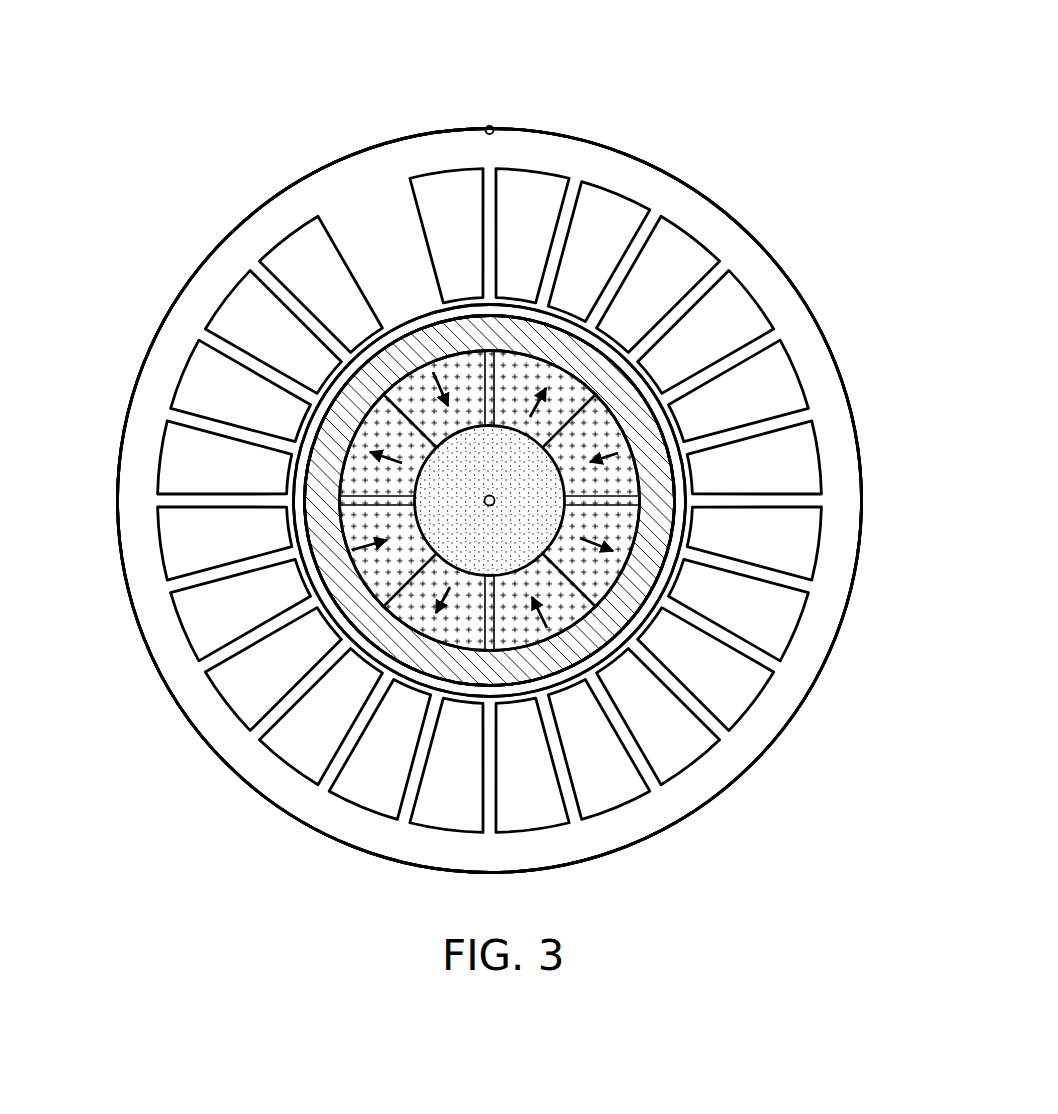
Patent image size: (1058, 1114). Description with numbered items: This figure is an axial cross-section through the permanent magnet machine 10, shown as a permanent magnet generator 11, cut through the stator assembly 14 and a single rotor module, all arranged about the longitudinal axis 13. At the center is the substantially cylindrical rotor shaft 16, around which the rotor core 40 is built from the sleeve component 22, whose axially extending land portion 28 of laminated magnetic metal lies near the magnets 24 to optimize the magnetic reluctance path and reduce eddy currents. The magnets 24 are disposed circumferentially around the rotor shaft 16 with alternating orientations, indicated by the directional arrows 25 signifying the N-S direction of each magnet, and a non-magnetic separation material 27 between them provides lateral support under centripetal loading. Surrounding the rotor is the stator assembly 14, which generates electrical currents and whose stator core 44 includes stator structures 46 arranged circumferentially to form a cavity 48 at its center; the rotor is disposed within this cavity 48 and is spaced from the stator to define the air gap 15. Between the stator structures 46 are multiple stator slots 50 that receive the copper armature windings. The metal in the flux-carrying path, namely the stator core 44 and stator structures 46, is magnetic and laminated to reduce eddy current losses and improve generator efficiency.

The permanent magnet machine 10 is at (311, 75).
The permanent magnet generator 11 is at (849, 297).
The longitudinal axis 13 is at (494, 496).
The stator assembly 14 is at (787, 670).
The air gap 15 is at (372, 350).
The rotor shaft 16 is at (505, 551).
The sleeve component 22 is at (495, 665).
The magnets 24 is at (313, 467).
The directional arrows 25 is at (481, 308).
The non-magnetic separation material 27 is at (375, 432).
The land portion 28 is at (318, 528).
The rotor core 40 is at (521, 328).
The stator core 44 is at (393, 150).
The stator structures 46 is at (717, 273).
The cavity 48 is at (677, 482).
The stator slots 50 is at (247, 302).